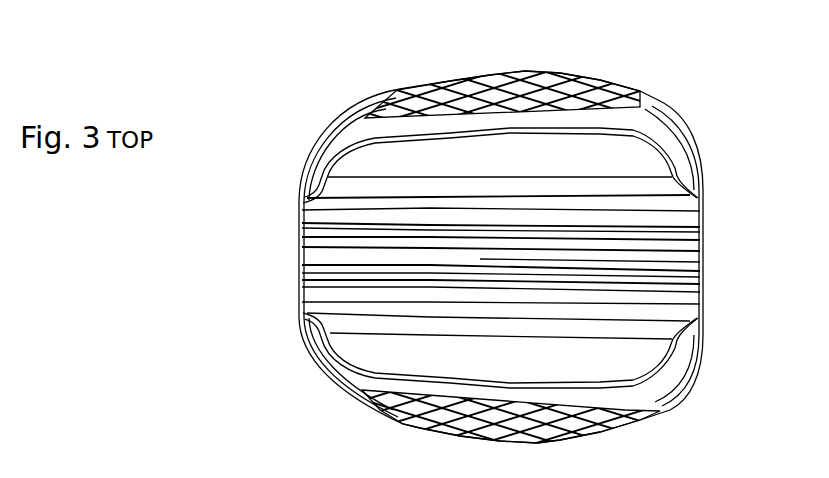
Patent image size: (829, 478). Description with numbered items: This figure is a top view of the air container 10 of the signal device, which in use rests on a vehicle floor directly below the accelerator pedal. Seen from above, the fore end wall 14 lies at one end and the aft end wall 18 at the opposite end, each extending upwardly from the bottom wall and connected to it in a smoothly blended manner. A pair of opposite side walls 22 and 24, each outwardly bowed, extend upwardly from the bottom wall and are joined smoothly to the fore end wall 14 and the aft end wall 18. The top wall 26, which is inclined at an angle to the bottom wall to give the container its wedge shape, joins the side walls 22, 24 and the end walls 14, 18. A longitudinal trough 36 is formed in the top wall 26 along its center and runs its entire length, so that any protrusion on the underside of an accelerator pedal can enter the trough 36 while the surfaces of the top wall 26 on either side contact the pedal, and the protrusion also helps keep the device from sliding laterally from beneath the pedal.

The air container 10 is at (237, 340).
The fore end wall 14 is at (705, 243).
The aft end wall 18 is at (302, 236).
The side wall 22 is at (430, 423).
The side wall 24 is at (513, 77).
The top wall 26 is at (637, 163).
The longitudinal trough 36 is at (320, 256).